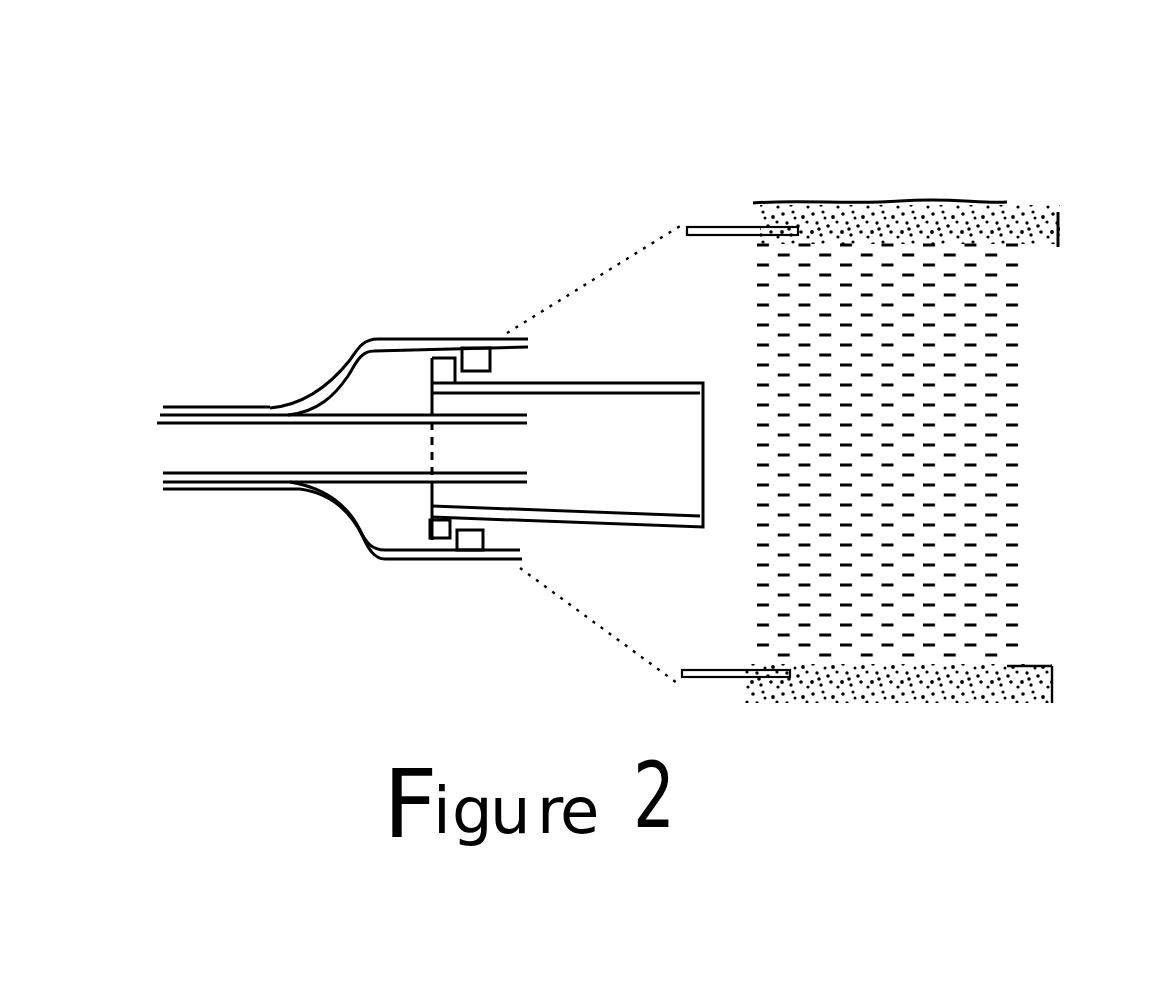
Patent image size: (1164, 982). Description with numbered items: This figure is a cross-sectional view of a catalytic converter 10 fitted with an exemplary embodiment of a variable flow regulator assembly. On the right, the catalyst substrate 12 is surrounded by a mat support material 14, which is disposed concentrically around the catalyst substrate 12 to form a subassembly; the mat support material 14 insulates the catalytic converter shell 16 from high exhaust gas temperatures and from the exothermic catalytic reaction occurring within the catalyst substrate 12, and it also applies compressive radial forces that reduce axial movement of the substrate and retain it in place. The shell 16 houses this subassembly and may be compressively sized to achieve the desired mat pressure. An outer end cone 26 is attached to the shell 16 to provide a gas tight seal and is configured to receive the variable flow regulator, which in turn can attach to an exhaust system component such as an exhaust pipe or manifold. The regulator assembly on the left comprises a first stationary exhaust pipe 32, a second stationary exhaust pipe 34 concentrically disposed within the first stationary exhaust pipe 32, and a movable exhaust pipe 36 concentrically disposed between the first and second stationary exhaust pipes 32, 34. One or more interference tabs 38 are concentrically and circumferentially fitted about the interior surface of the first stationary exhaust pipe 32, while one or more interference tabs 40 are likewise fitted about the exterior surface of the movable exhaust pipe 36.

The catalytic converter 10 is at (855, 172).
The catalyst substrate 12 is at (977, 520).
The mat support material 14 is at (1042, 227).
The catalytic converter shell 16 is at (874, 202).
The outer end cone 26 is at (625, 253).
The first stationary exhaust pipe 32 is at (413, 336).
The second stationary exhaust pipe 34 is at (360, 530).
The movable exhaust pipe 36 is at (648, 386).
The interference tabs 38 is at (492, 352).
The interference tabs 40 is at (432, 373).